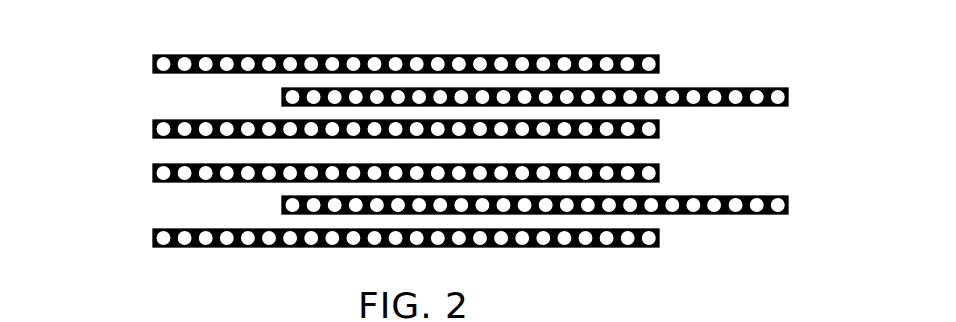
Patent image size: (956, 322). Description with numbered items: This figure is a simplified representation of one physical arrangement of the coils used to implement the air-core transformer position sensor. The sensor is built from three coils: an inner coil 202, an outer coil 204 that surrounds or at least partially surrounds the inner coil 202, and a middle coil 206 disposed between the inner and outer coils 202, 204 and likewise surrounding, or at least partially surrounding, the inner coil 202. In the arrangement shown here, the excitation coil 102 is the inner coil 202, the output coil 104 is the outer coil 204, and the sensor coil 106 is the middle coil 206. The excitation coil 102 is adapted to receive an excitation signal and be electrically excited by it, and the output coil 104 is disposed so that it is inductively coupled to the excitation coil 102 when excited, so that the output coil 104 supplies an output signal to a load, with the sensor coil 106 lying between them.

The excitation coil 102 is at (165, 107).
The output coil 104 is at (629, 62).
The sensor coil 106 is at (714, 207).
The inner coil 202 is at (446, 130).
The outer coil 204 is at (400, 127).
The middle coil 206 is at (583, 176).